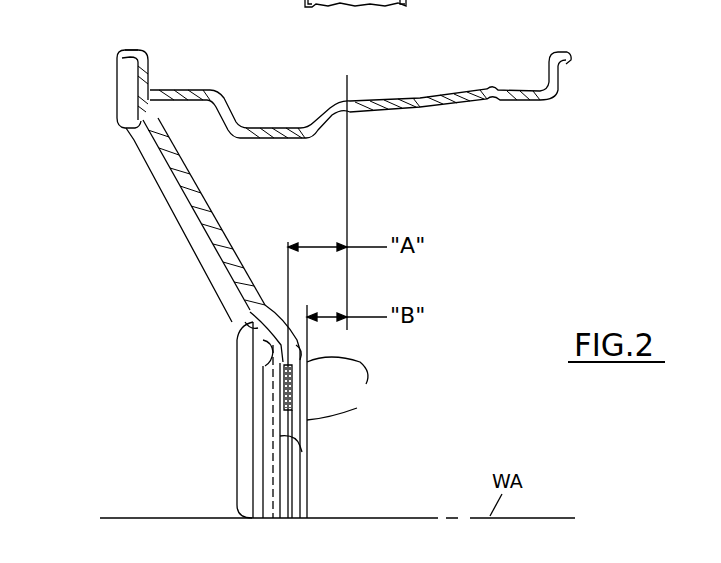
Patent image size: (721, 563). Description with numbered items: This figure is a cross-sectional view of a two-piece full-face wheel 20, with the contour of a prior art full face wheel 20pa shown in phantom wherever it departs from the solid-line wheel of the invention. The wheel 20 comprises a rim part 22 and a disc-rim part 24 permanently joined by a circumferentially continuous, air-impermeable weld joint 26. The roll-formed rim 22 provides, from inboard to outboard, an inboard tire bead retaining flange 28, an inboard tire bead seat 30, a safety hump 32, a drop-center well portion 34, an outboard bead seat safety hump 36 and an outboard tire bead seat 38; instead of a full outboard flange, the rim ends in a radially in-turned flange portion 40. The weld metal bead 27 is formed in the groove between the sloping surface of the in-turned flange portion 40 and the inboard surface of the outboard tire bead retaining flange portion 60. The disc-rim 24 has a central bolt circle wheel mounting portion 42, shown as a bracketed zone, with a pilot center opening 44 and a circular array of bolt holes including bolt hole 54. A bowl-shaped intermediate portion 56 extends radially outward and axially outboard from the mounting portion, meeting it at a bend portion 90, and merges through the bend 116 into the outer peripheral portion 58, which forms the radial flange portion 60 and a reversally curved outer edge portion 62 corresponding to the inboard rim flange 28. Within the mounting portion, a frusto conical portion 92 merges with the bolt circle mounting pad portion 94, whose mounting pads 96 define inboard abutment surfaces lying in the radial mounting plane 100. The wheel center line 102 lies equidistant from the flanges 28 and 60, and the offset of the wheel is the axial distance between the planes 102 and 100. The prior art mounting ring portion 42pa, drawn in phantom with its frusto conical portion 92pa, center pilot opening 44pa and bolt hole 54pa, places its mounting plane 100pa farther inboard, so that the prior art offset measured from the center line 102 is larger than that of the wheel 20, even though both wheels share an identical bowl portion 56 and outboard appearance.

The wheel 20 is at (100, 56).
The rim part 22 is at (326, 71).
The disc-rim part 24 is at (141, 55).
The weld joint 26 is at (158, 93).
The weld metal bead 27 is at (150, 95).
The inboard tire bead retaining flange 28 is at (558, 54).
The inboard tire bead seat 30 is at (524, 90).
The safety hump 32 is at (490, 90).
The drop-center well portion 34 is at (284, 132).
The outboard bead seat safety hump 36 is at (214, 92).
The outboard tire bead seat 38 is at (200, 92).
The radially in-turned flange portion 40 is at (160, 108).
The bolt circle wheel mounting portion 42 is at (237, 390).
The pilot center opening 44 is at (300, 448).
The wheel mounting bolt hole 54 is at (255, 388).
The intermediate portion 56 is at (177, 224).
The outer peripheral portion 58 is at (111, 78).
The outboard tire bead retaining flange portion 60 is at (150, 88).
The reversally curved outer edge portion 62 is at (127, 48).
The bend portion 90 is at (252, 313).
The frusto conical portion 92 is at (276, 308).
The frusto conical portion of the prior art wheel 92pa is at (246, 332).
The bolt circle mounting pad portion 94 is at (306, 366).
The mounting pad 96 is at (344, 388).
The radial mounting plane 100 is at (308, 304).
The mounting plane of the prior art wheel 100pa is at (286, 238).
The center line 102 is at (349, 156).
The bend 116 is at (143, 118).
The prior art full face wheel 20pa is at (265, 502).
The mounting ring portion of the prior art wheel 42pa is at (252, 466).
The center pilot opening of the prior art disc-rim 44pa is at (268, 468).
The bolt hole of the prior art disc-rim 54pa is at (266, 408).